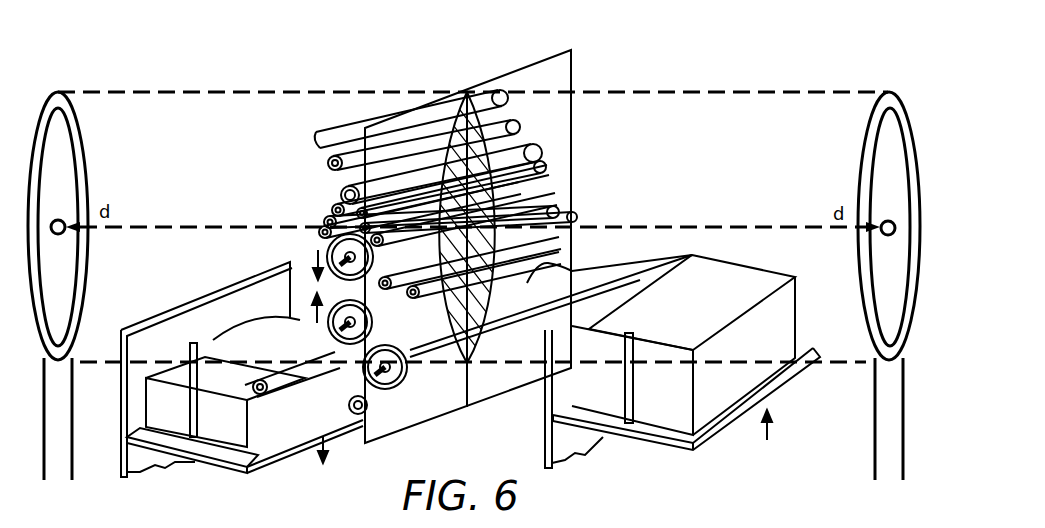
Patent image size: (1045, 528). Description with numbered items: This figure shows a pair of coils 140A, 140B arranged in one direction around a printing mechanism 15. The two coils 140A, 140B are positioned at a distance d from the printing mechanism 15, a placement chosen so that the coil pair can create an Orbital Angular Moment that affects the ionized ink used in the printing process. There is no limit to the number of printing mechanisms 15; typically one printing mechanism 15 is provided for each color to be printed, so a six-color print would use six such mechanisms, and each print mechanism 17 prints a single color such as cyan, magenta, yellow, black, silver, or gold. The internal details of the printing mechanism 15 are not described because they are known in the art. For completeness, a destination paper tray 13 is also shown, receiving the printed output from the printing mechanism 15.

The destination paper tray 13 is at (227, 433).
The printing mechanism 15 is at (713, 284).
The print mechanism 17 is at (451, 50).
The coil 140A is at (68, 113).
The coil 140B is at (876, 108).